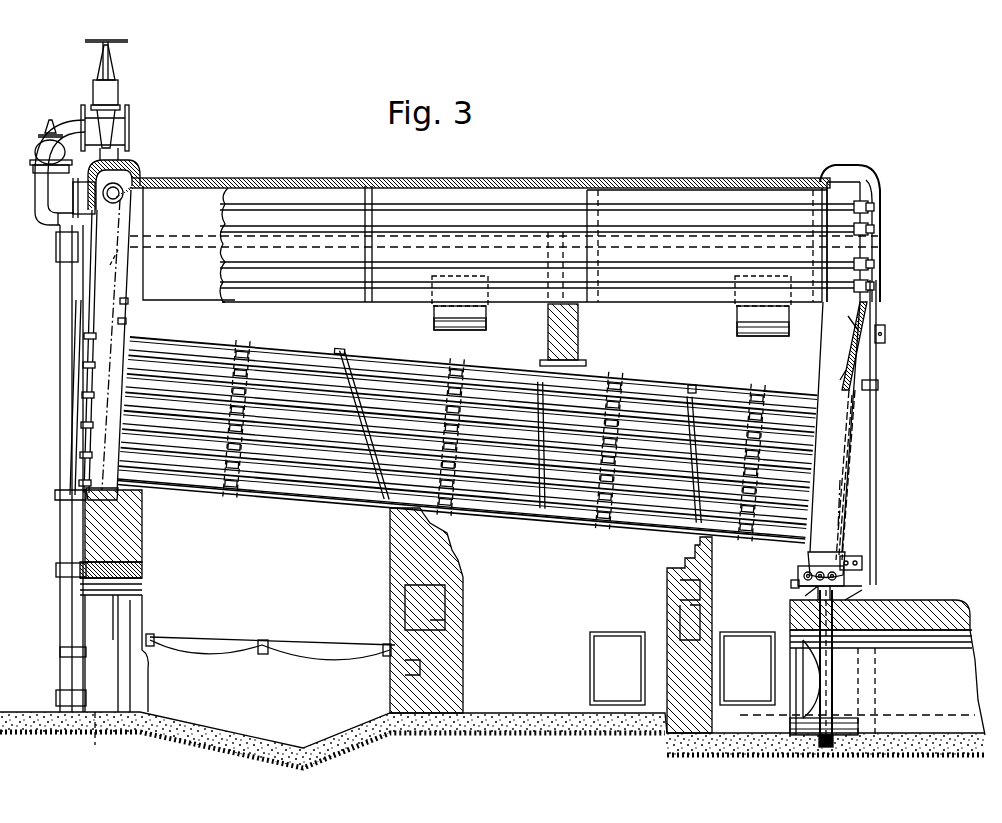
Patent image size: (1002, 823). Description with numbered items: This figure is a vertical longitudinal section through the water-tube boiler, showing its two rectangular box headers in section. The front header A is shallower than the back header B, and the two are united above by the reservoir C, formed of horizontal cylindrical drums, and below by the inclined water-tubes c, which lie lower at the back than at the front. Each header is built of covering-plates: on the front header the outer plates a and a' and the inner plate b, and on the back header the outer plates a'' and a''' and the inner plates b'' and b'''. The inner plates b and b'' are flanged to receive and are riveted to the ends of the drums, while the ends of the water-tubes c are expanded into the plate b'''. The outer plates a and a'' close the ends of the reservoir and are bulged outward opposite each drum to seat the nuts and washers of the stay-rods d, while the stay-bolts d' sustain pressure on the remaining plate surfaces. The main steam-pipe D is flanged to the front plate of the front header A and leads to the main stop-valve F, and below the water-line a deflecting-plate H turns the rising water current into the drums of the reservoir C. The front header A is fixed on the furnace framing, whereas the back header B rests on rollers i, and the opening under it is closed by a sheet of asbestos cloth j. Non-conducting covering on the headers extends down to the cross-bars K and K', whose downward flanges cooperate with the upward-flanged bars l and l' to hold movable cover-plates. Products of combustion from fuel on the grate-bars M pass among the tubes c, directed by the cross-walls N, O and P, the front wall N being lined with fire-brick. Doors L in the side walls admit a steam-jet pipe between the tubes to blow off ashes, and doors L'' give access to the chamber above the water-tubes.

The main stop-valve F is at (105, 95).
The water-tubes c is at (459, 341).
The main steam-pipe D is at (62, 416).
The deflecting-plate H is at (95, 262).
The reservoir C is at (505, 233).
The cross-bar K is at (62, 397).
The front header A is at (112, 330).
The inner covering-plate of front header b is at (154, 320).
The outer covering-plate of front header a is at (107, 266).
The lower outer covering-plate of front header a' is at (106, 345).
The bar l is at (59, 488).
The doors L is at (497, 450).
The front cross-wall N is at (343, 350).
The cross-wall O is at (543, 362).
The cross-wall P is at (691, 375).
The doors above the water-tubes L'' is at (611, 306).
The inner covering-plate of back header b'' is at (828, 319).
The outer covering-plate of back header a'' is at (876, 427).
The back header B is at (834, 440).
The lower inner covering-plate of back header b''' is at (821, 377).
The cross-bar K' is at (893, 432).
The lower outer covering-plate of back header a''' is at (835, 504).
The bar l' is at (874, 552).
The rollers i is at (846, 576).
The asbestos cloth j is at (790, 582).
The grate-bars M is at (207, 645).
The stay-rods d is at (86, 748).
The stay-bolts d' is at (547, 267).